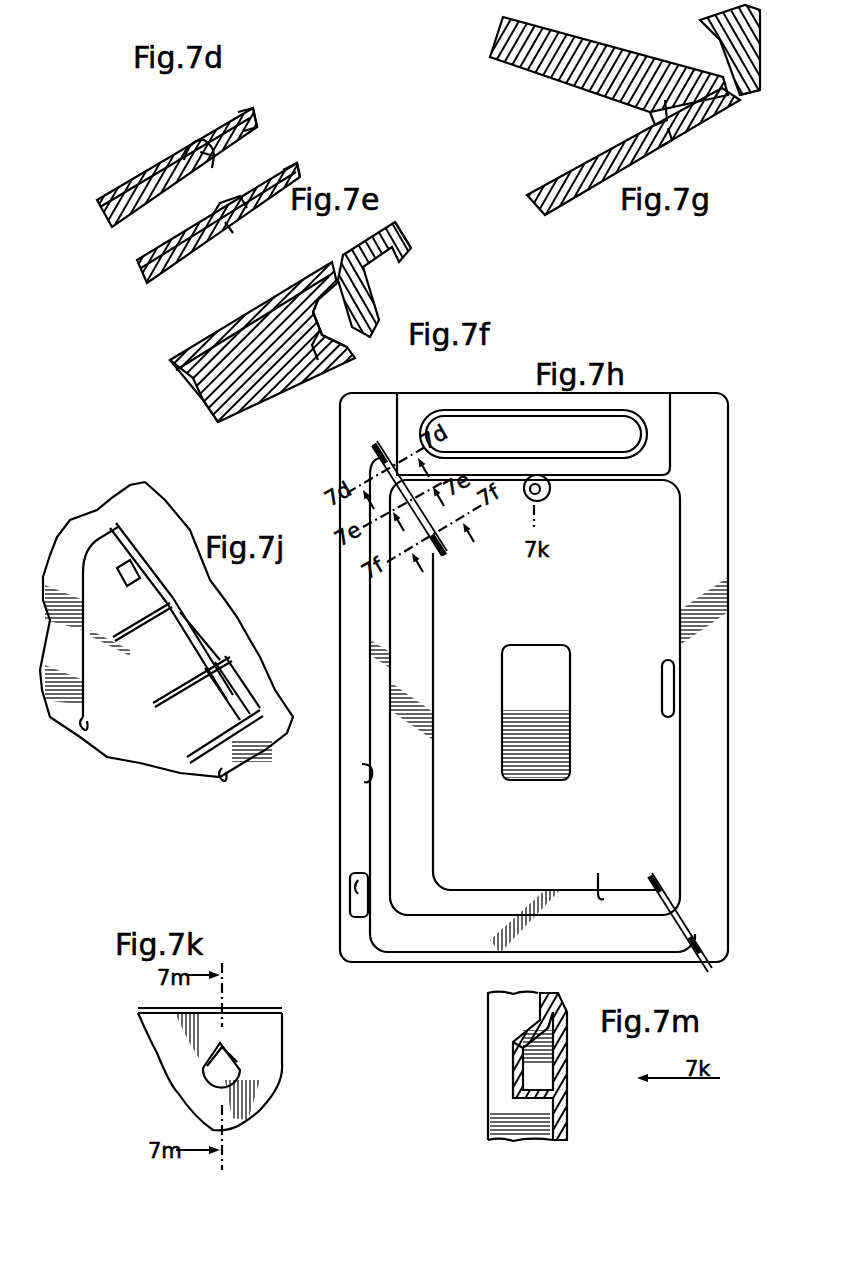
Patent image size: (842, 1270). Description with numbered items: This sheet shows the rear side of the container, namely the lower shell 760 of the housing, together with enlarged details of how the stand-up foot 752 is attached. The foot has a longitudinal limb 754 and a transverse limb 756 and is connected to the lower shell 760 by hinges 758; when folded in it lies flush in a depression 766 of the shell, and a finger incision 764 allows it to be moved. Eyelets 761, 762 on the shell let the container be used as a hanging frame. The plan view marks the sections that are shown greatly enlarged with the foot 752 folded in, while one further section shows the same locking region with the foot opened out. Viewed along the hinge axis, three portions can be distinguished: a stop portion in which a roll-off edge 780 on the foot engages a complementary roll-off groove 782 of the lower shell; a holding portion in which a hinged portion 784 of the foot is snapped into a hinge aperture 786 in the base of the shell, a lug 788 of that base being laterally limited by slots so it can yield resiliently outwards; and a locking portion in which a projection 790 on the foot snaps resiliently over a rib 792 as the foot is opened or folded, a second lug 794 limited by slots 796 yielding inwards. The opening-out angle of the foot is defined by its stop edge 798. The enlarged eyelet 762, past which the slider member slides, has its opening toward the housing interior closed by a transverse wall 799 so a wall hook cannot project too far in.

In FIG. 7D, the stand-up foot 752 is at (97, 202).
In FIG. 7E, the stand-up foot 752 is at (137, 268).
In FIG. 7F, the stand-up foot 752 is at (170, 362).
In FIG. 7G, the stand-up foot 752 is at (540, 67).
In FIG. 7H, the stand-up foot 752 is at (437, 829).
In FIG. 7H, the longitudinal limb 754 is at (435, 696).
In FIG. 7H, the transverse limb 756 is at (503, 900).
In FIG. 7D, the hinges 758 is at (130, 159).
In FIG. 7E, the hinges 758 is at (199, 262).
In FIG. 7F, the hinges 758 is at (266, 414).
In FIG. 7H, the hinges 758 is at (458, 558).
In FIG. 7D, the lower shell 760 is at (252, 108).
In FIG. 7E, the lower shell 760 is at (286, 168).
In FIG. 7F, the lower shell 760 is at (395, 225).
In FIG. 7G, the lower shell 760 is at (730, 55).
In FIG. 7H, the lower shell 760 is at (630, 632).
In FIG. 7J, the lower shell 760 is at (86, 530).
In FIG. 7K, the lower shell 760 is at (175, 1065).
In FIG. 7M, the lower shell 760 is at (568, 1125).
In FIG. 7H, the eyelet 761 is at (662, 710).
In FIG. 7H, the eyelet 762 is at (548, 498).
In FIG. 7K, the eyelet 762 is at (236, 1068).
In FIG. 7M, the eyelet 762 is at (555, 1078).
In FIG. 7H, the finger incision 764 is at (350, 905).
In FIG. 7H, the depression 766 is at (362, 766).
In FIG. 7J, the depression 766 is at (93, 725).
In FIG. 7D, the roll-off edge 780 is at (206, 160).
In FIG. 7J, the roll-off edge 780 is at (128, 548).
In FIG. 7D, the roll-off groove 782 is at (195, 150).
In FIG. 7E, the hinged portion 784 is at (228, 234).
In FIG. 7E, the hinge aperture 786 is at (228, 210).
In FIG. 7J, the hinge aperture 786 is at (178, 634).
In FIG. 7J, the lug 788 is at (170, 677).
In FIG. 7F, the projection 790 is at (338, 348).
In FIG. 7G, the projection 790 is at (648, 115).
In FIG. 7F, the rib 792 is at (316, 355).
In FIG. 7G, the rib 792 is at (686, 126).
In FIG. 7J, the rib 792 is at (223, 687).
In FIG. 7J, the second lug 794 is at (207, 727).
In FIG. 7J, the slots 796 is at (165, 688).
In FIG. 7F, the stop edge 798 is at (350, 288).
In FIG. 7G, the stop edge 798 is at (740, 98).
In FIG. 7K, the transverse wall 799 is at (228, 1055).
In FIG. 7M, the transverse wall 799 is at (513, 1068).